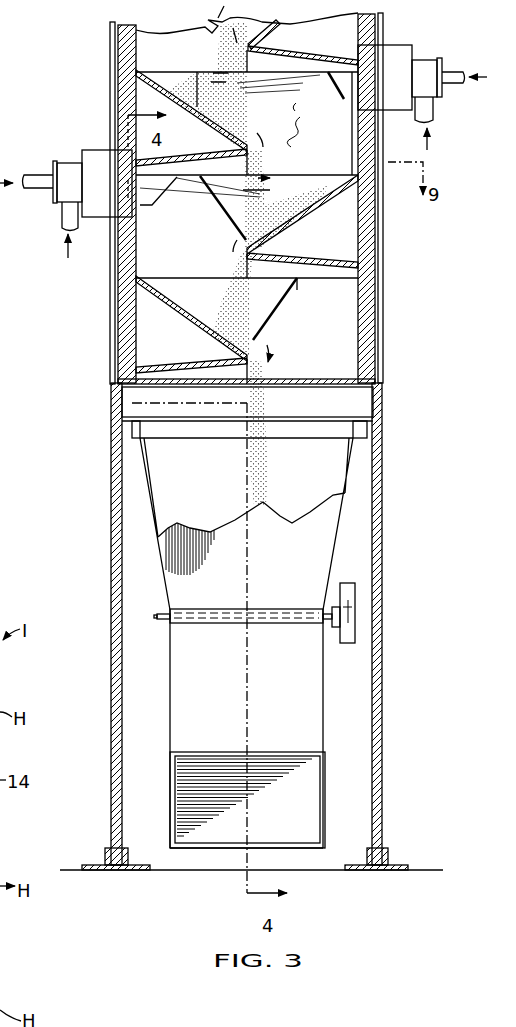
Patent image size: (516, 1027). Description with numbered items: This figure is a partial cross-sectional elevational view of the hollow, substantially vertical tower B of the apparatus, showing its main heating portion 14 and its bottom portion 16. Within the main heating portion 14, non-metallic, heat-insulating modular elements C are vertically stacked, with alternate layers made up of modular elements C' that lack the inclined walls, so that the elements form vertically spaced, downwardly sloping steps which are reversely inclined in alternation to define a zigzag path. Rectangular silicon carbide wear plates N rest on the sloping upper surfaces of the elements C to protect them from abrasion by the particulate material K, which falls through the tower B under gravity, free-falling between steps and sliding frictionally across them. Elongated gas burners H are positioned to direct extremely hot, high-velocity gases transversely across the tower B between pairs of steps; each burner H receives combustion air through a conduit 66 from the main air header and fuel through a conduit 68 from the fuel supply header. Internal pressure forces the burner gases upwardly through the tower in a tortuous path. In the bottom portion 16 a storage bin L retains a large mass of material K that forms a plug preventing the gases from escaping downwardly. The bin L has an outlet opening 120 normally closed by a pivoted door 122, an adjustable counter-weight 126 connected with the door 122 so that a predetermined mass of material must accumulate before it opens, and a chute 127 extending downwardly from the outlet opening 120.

The main heating portion 14 is at (384, 242).
The bottom portion 16 is at (323, 473).
The conduit 66 is at (62, 221).
The conduit 68 is at (34, 174).
The outlet opening 120 is at (298, 682).
The door 122 is at (265, 610).
The adjustable counter-weight 126 is at (361, 601).
The chute 127 is at (305, 813).
The gas burner H is at (88, 147).
The modular element C is at (243, 201).
The modular element C' is at (247, 206).
The wear plate N is at (264, 152).
The particulate material K is at (301, 125).
The tower B is at (384, 329).
The storage bin L is at (352, 545).